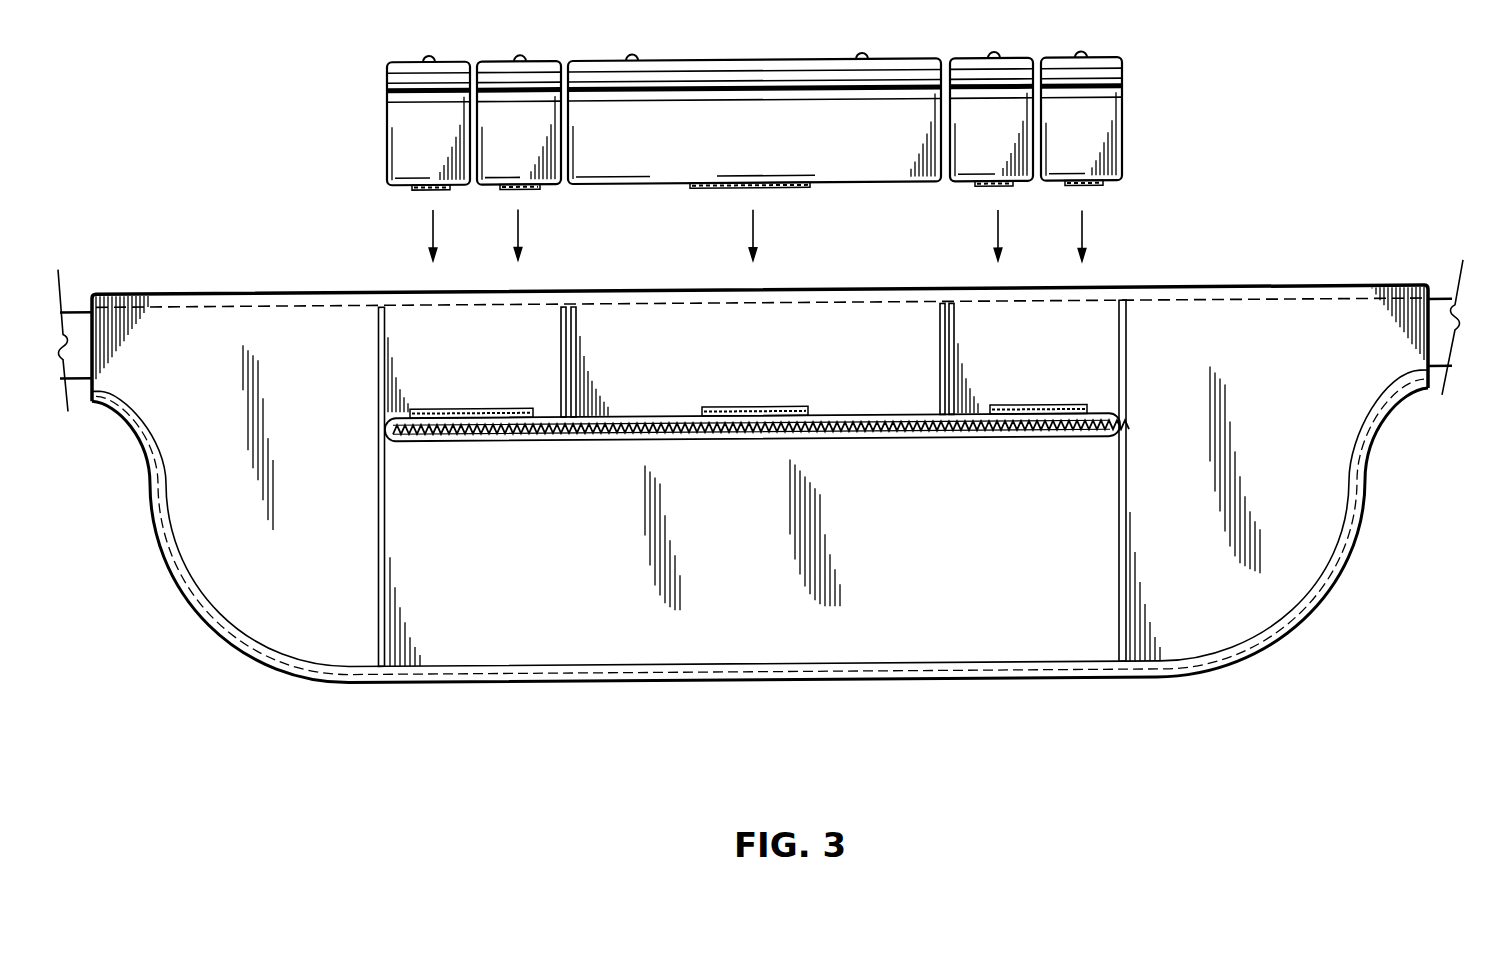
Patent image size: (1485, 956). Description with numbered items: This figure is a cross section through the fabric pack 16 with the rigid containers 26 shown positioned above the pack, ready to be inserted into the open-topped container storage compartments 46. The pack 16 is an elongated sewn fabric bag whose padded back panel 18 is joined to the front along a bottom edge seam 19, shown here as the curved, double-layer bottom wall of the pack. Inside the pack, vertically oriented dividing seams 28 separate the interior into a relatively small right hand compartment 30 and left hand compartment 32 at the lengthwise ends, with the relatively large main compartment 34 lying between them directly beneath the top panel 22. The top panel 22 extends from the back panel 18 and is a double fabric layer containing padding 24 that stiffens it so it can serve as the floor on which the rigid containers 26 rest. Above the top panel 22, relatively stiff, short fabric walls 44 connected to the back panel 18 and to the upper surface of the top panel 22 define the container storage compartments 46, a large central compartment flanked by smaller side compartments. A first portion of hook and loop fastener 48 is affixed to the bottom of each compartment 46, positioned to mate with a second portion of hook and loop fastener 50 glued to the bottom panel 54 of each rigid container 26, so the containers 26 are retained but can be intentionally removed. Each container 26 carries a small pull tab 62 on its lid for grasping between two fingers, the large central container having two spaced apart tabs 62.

The fabric pack 16 is at (1243, 252).
The back panel 18 is at (893, 329).
The bottom edge seam 19 is at (268, 662).
The top panel 22 is at (608, 437).
The padding 24 is at (728, 438).
The rigid container 26 is at (547, 192).
The dividing seam 28 is at (386, 535).
The right hand compartment 30 is at (268, 327).
The left hand compartment 32 is at (1298, 334).
The main compartment 34 is at (967, 652).
The fabric wall 44 is at (387, 348).
The container storage compartment 46 is at (522, 324).
The first portion of hook and loop fastener 48 is at (473, 408).
The second portion of hook and loop fastener 50 is at (430, 195).
The bottom panel 54 is at (398, 196).
The pull tab 62 is at (421, 58).